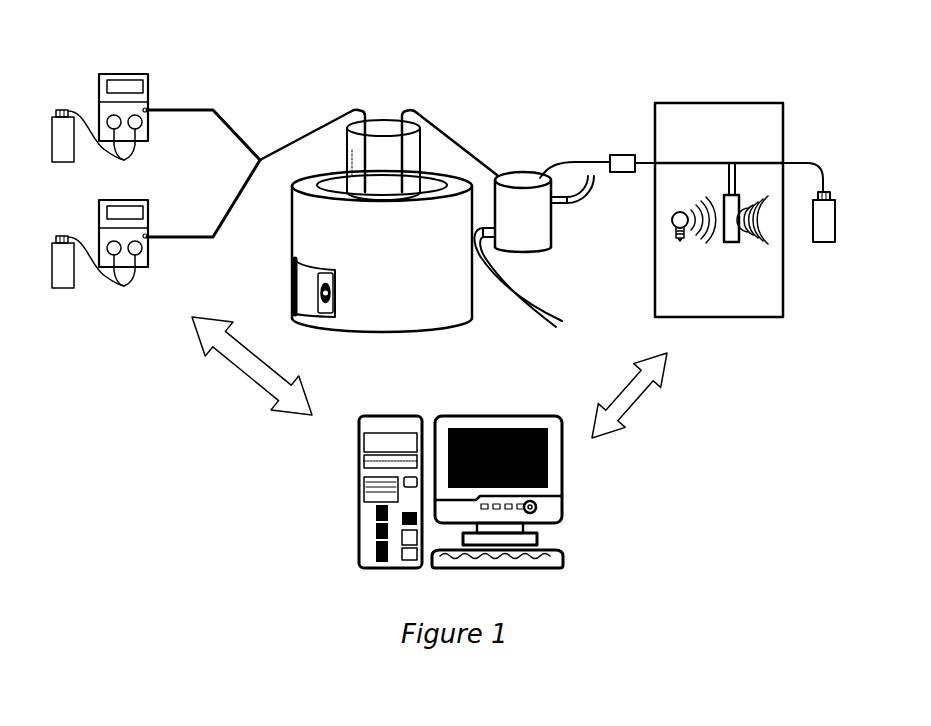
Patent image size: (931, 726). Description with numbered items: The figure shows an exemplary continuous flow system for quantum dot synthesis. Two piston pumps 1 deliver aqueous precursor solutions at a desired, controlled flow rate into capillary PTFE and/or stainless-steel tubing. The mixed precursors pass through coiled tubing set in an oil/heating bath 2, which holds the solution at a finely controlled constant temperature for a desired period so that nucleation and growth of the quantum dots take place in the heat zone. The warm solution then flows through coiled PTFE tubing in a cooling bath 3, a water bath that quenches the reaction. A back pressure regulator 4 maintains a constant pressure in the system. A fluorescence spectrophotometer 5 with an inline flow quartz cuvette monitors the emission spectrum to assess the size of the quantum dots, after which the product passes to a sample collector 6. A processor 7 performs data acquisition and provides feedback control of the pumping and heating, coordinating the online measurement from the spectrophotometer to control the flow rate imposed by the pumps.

The piston pumps 1 is at (274, 211).
The oil/heating bath 2 is at (382, 254).
The cooling bath 3 is at (542, 223).
The back pressure regulator 4 is at (628, 188).
The fluorescence spectrophotometer 5 is at (739, 240).
The sample collector 6 is at (827, 246).
The processor 7 is at (492, 492).